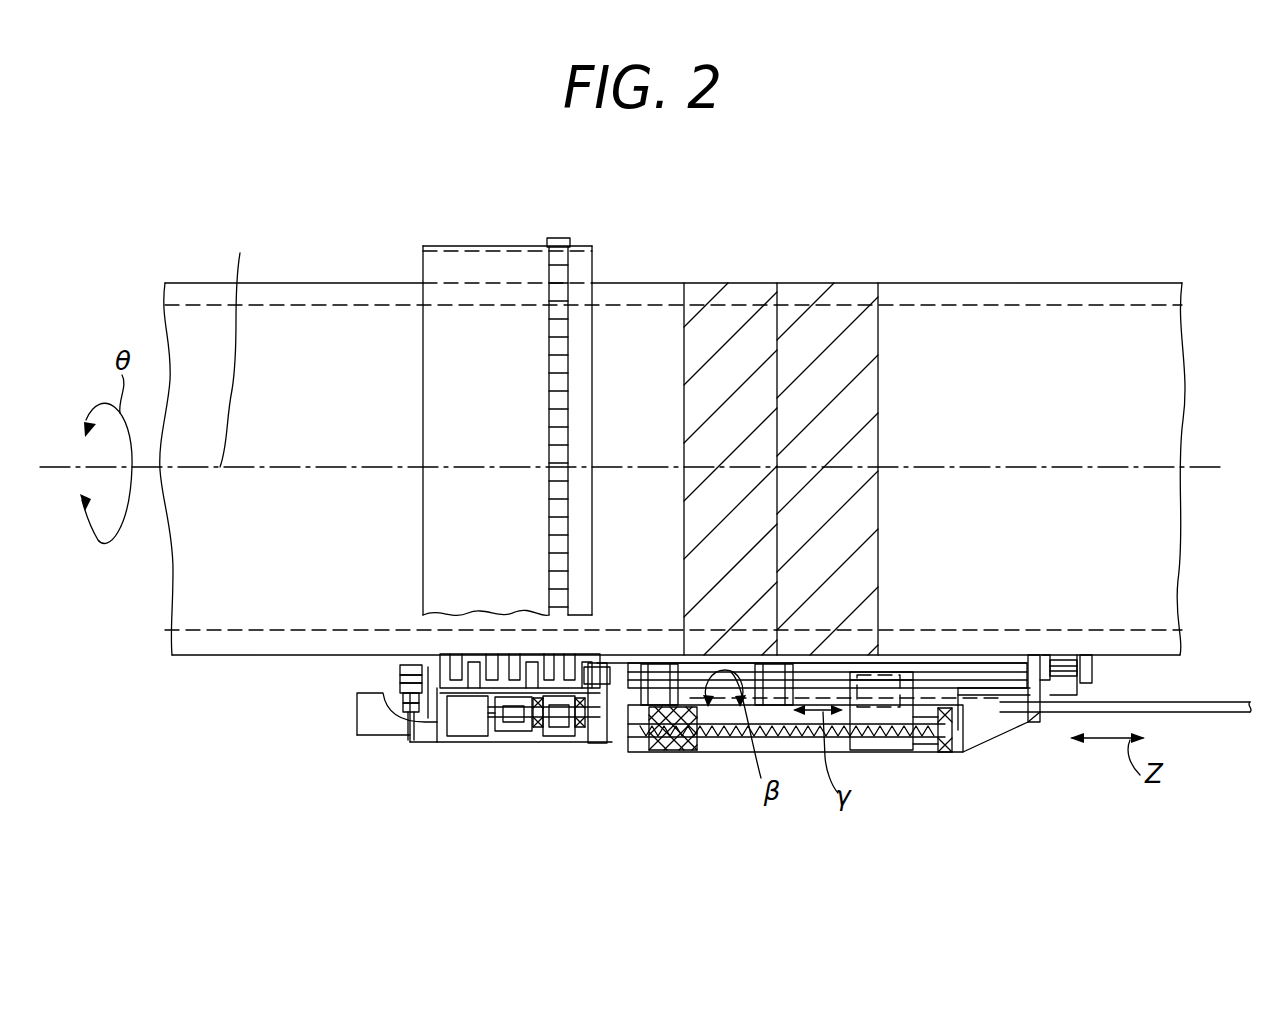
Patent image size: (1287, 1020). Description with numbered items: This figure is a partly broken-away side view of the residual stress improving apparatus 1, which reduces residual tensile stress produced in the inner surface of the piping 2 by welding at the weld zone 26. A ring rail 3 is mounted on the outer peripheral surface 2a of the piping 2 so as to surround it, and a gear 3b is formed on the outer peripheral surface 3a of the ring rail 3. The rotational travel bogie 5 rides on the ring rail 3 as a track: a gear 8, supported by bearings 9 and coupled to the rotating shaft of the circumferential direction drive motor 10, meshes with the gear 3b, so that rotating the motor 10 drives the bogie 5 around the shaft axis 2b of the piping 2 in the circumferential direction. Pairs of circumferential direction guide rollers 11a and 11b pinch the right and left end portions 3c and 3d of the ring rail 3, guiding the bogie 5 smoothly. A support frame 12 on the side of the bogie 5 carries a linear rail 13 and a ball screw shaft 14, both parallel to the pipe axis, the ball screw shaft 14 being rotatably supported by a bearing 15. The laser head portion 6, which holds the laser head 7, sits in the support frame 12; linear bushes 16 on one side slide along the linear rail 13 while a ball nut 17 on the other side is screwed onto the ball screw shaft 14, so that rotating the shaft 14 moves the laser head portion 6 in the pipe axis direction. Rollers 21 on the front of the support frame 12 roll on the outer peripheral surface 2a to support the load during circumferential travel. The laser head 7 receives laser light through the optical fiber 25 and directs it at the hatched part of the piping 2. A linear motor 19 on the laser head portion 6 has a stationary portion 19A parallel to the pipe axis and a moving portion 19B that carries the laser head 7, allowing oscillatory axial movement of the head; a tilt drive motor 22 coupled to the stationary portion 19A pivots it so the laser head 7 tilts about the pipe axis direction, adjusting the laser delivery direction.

The residual stress improving apparatus 1 is at (459, 748).
The piping 2 is at (850, 283).
The outer peripheral surface 2a is at (797, 283).
The shaft axis 2b is at (235, 344).
The ring rail 3 is at (500, 385).
The outer peripheral surface of ring rail 3a is at (475, 268).
The gear 3b is at (555, 272).
The right end portion of ring rail 3c is at (437, 263).
The left end portion of ring rail 3d is at (588, 266).
The rotational travel bogie 5 is at (461, 745).
The laser head portion 6 is at (925, 752).
The laser head 7 is at (880, 680).
The gear 8 is at (543, 742).
The bearings 9 is at (538, 742).
The circumferential direction drive motor 10 is at (357, 722).
The circumferential direction guide rollers 11a is at (420, 742).
The circumferential direction guide rollers 11b is at (430, 673).
The support frame 12 is at (993, 743).
The linear rail 13 is at (990, 683).
The ball screw shaft 14 is at (860, 757).
The bearing 15 is at (950, 752).
The linear bushes 16 is at (658, 657).
The ball nut 17 is at (718, 755).
The linear motor 19 is at (959, 821).
The linear motor stationary portion 19A is at (892, 760).
The linear motor moving portion 19B is at (883, 755).
The rollers 21 is at (1093, 670).
The tilt drive motor 22 is at (690, 755).
The optical fiber 25 is at (1235, 702).
The weld zone 26 is at (773, 375).